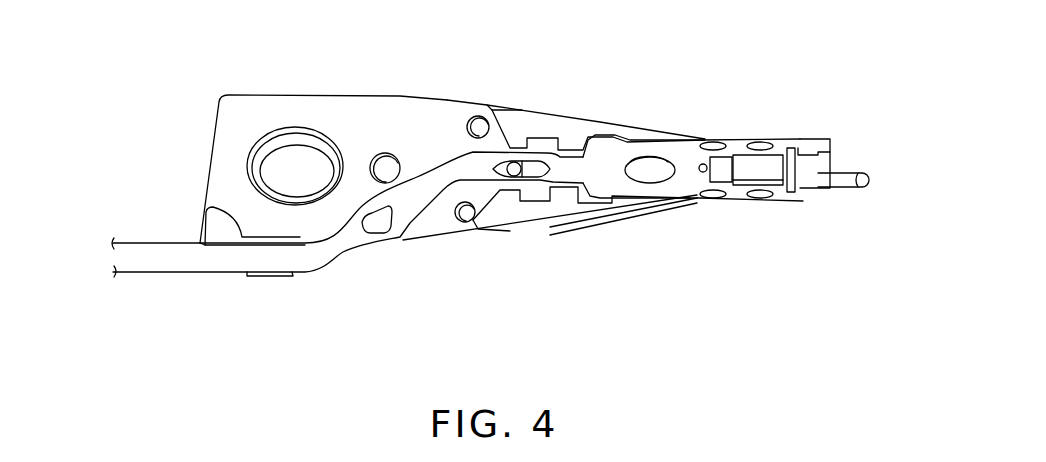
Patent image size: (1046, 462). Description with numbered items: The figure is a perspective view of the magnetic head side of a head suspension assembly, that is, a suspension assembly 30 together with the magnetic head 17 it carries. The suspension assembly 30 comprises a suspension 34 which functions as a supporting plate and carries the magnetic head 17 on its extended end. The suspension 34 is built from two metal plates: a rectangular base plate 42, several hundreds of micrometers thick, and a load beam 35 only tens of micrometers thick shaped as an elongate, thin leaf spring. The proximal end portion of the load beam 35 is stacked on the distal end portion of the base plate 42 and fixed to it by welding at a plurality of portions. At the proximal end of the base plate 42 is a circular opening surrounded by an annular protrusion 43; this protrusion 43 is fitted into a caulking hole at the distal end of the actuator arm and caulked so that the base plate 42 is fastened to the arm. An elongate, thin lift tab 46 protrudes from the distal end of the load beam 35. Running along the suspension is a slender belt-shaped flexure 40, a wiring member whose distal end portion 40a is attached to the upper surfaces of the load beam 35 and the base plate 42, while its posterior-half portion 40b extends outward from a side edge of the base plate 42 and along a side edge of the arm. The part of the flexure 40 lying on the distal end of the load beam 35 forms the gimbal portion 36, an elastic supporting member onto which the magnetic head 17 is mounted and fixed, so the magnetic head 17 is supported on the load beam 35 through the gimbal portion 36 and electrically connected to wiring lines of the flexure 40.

The suspension assembly 30 is at (444, 94).
The suspension 34 is at (468, 245).
The load beam 35 is at (572, 213).
The gimbal portion 36 is at (832, 134).
The flexure 40 is at (343, 249).
The distal end portion 40a is at (572, 165).
The posterior-half portion 40b is at (196, 262).
The base plate 42 is at (371, 105).
The annular protrusion 43 is at (288, 142).
The magnetic head 17 is at (772, 170).
The lift tab 46 is at (851, 182).